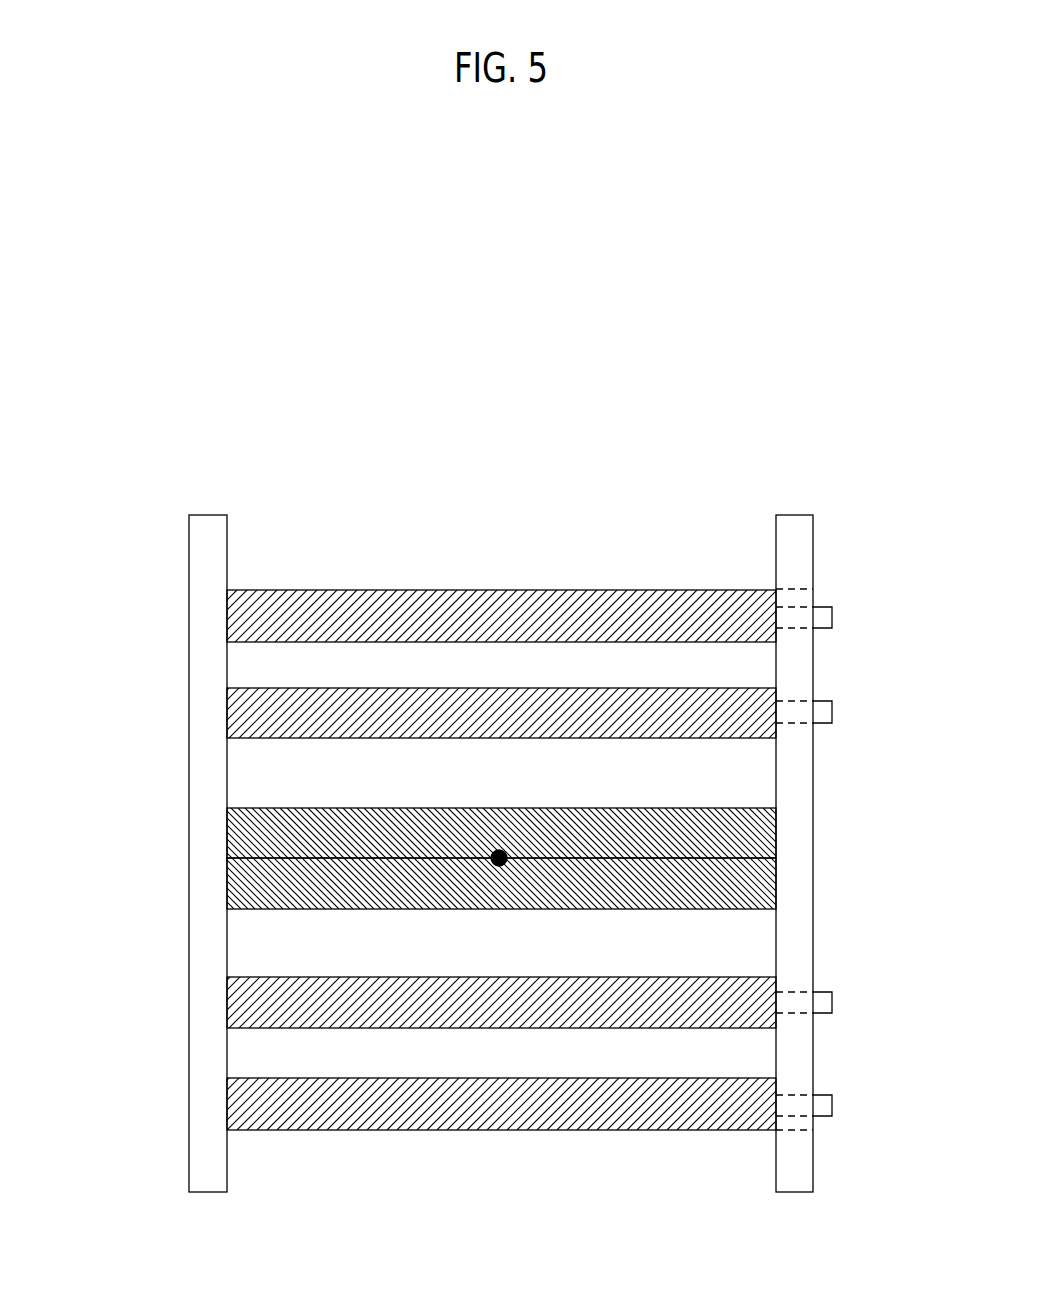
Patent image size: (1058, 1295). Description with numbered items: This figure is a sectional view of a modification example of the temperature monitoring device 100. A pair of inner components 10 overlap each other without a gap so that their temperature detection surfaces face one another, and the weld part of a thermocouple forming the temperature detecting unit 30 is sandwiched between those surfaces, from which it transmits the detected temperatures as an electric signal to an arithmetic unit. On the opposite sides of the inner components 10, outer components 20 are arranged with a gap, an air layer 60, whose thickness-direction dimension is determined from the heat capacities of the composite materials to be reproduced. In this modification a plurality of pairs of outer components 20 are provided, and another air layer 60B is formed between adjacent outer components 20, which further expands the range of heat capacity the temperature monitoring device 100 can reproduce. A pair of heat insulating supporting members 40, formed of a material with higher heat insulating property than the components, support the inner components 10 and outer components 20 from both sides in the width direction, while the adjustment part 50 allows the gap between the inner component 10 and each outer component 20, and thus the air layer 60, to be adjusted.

The temperature monitoring device 100 is at (355, 461).
The heat insulating supporting member 40 is at (207, 517).
The adjustment part 50 is at (868, 642).
The outer component 20 is at (235, 616).
The inner component 10 is at (235, 826).
The temperature detecting unit 30 is at (497, 855).
The air layer 60B is at (320, 665).
The air layer 60 is at (315, 947).